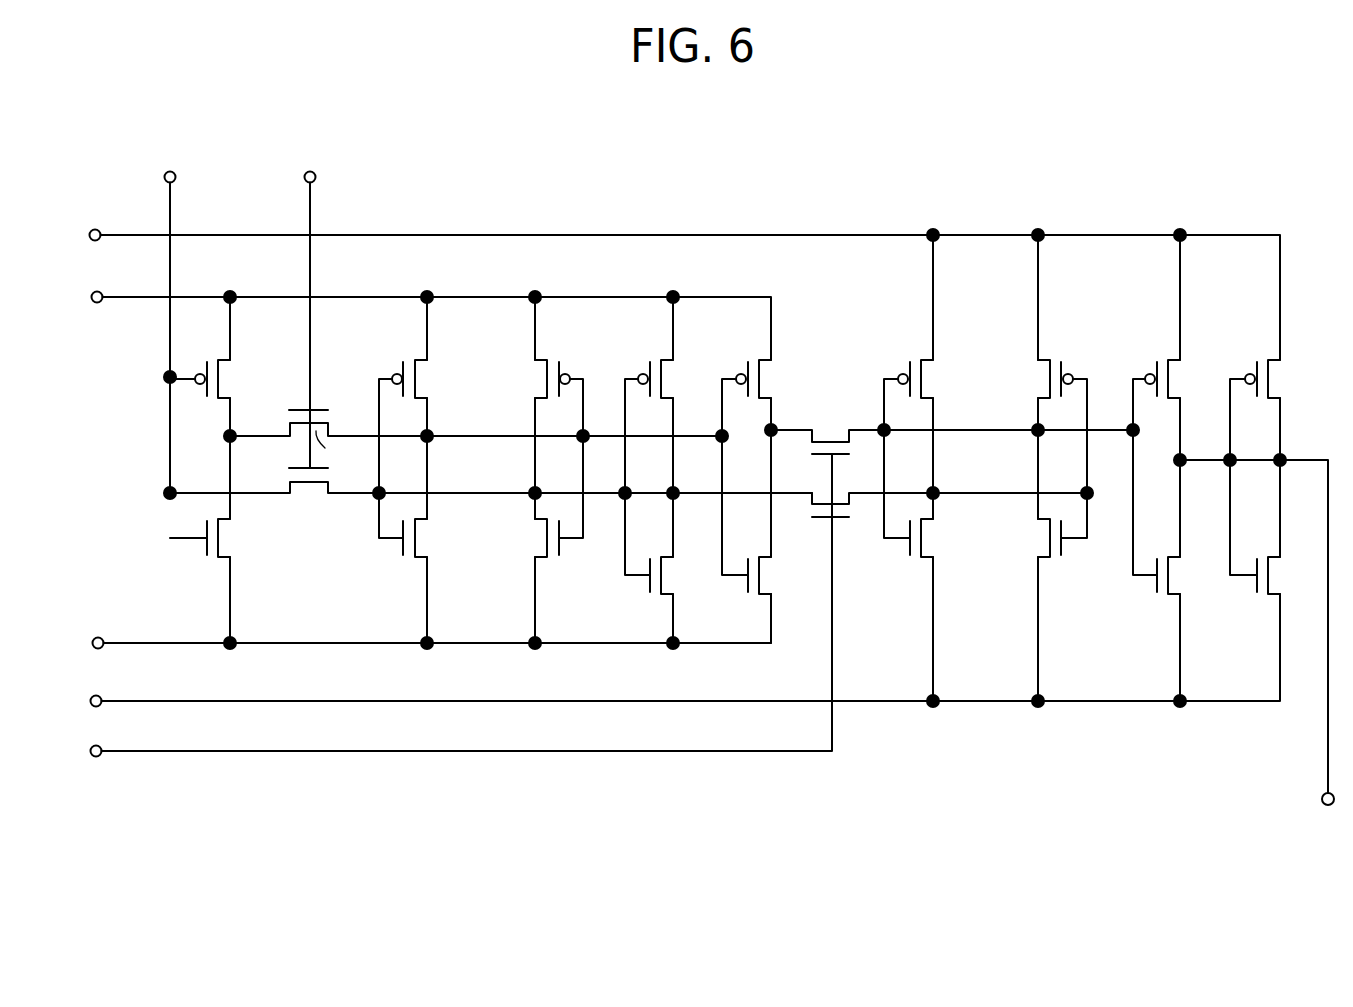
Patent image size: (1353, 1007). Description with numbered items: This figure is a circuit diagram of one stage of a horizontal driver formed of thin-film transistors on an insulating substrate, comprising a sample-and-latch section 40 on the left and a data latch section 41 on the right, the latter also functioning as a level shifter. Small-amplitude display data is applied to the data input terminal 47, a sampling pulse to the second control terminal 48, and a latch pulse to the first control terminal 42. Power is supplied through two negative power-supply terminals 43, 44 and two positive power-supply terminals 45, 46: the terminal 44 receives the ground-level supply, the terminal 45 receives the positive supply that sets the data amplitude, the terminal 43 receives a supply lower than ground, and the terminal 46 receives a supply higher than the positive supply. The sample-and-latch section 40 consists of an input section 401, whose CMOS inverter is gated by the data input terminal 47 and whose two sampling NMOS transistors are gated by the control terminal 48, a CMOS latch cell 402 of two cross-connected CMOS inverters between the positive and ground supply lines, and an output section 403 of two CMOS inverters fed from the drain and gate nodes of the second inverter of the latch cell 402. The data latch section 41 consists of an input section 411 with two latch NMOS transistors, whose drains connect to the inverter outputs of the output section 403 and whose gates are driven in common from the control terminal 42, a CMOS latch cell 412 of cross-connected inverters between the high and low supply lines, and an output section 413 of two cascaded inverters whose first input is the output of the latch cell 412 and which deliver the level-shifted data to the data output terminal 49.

The sample-and-latch section 40 is at (780, 782).
The data latch section 41 is at (1305, 787).
The first control terminal 42 is at (96, 757).
The negative power-supply terminal 43 is at (96, 707).
The negative power-supply terminal 44 is at (98, 649).
The positive power-supply terminal 45 is at (97, 303).
The positive power-supply terminal 46 is at (95, 241).
The data input terminal 47 is at (176, 178).
The second control terminal 48 is at (316, 178).
The data output terminal 49 is at (1322, 794).
The input section 401 is at (118, 535).
The CMOS latch cell 402 is at (605, 218).
The output section 403 is at (731, 266).
The input section 411 is at (853, 364).
The CMOS latch cell 412 is at (1097, 220).
The output section 413 is at (1122, 611).